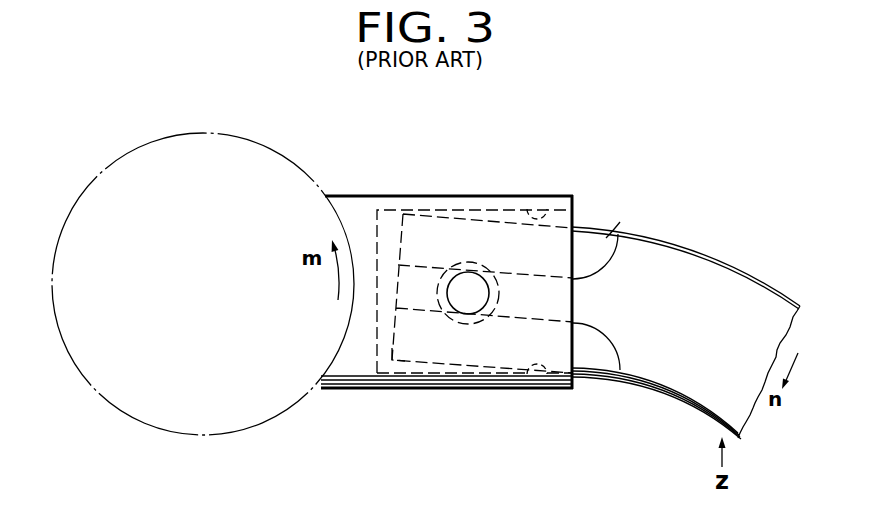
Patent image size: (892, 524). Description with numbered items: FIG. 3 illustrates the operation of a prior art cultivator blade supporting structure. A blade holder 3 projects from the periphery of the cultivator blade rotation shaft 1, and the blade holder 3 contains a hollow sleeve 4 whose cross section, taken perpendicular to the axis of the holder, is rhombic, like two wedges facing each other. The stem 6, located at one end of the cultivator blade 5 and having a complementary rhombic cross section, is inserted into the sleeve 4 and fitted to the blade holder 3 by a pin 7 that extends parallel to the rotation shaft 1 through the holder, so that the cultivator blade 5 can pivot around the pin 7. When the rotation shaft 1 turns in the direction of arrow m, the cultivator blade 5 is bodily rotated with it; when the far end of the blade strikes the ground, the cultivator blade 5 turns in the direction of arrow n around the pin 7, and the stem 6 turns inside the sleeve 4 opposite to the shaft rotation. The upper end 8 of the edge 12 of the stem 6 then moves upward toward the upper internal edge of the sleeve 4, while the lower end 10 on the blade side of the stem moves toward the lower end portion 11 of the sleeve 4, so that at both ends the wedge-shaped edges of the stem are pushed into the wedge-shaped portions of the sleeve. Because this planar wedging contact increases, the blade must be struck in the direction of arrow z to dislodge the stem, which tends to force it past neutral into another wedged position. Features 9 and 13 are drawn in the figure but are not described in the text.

The cultivator blade rotation shaft 1 is at (278, 163).
The blade holder 3 is at (360, 203).
The hollow sleeve 4 is at (392, 215).
The cultivator blade 5 is at (682, 243).
The stem 6 is at (562, 244).
The pin 7 is at (467, 280).
The upper end 8 is at (427, 218).
The notch 9 is at (542, 210).
The lower end 10 is at (573, 390).
The lower end portion 11 is at (548, 378).
The edge 12 is at (385, 365).
The fold line 13 is at (573, 253).